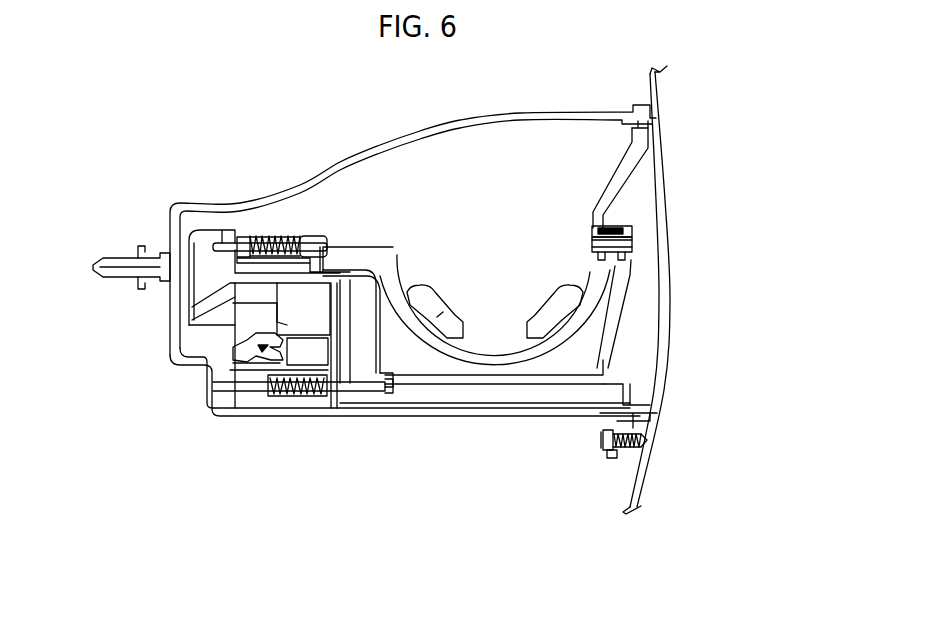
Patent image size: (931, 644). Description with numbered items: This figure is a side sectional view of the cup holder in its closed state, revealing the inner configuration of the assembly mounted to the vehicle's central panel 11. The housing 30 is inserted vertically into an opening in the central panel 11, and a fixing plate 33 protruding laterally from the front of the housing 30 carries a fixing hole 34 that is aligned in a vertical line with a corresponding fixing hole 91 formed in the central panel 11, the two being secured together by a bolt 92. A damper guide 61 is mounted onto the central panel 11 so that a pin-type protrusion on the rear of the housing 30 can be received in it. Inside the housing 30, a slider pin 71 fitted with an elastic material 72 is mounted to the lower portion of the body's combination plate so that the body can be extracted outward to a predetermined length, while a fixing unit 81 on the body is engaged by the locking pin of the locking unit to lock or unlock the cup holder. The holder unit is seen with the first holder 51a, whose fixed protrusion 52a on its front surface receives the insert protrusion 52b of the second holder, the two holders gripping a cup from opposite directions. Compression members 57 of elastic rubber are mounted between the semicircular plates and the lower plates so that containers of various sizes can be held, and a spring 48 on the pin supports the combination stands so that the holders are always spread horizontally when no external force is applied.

The central panel 11 is at (667, 88).
The housing 30 is at (232, 440).
The fixing plate 33 is at (606, 462).
The fixing hole 34 is at (608, 456).
The spring 48 is at (270, 238).
The first holder 51a is at (583, 307).
The fixed protrusion 52a is at (630, 250).
The insert protrusion 52b is at (632, 230).
The compression member 57 is at (552, 308).
The damper guide 61 is at (122, 252).
The slider pin 71 is at (362, 390).
The elastic material 72 is at (297, 395).
The fixing unit 81 is at (237, 342).
The fixing hole 91 is at (647, 440).
The bolt 92 is at (601, 438).